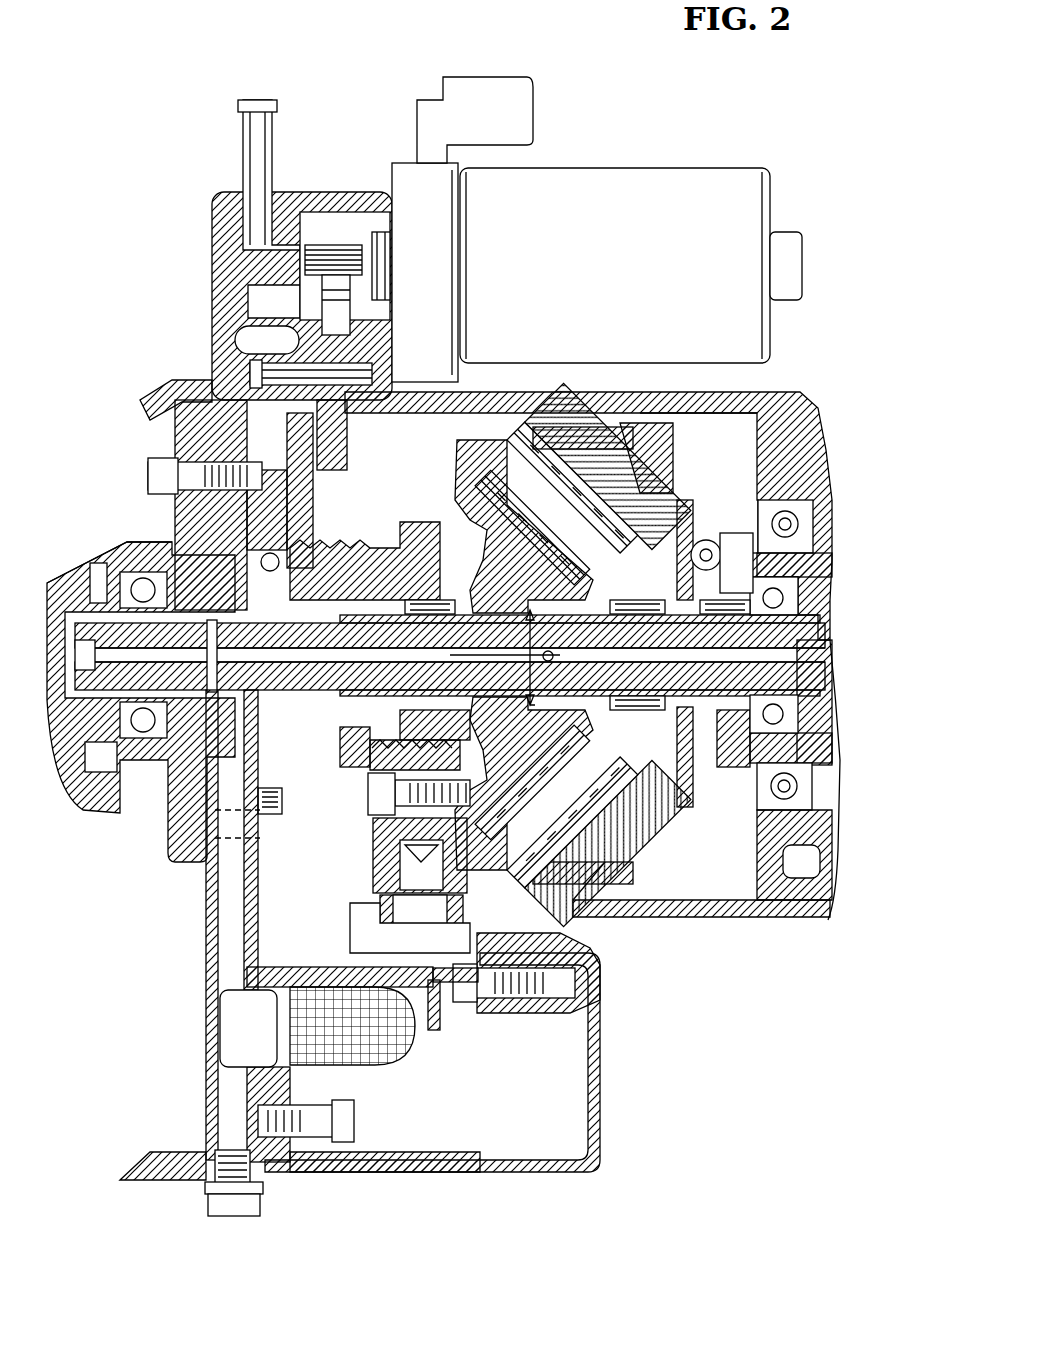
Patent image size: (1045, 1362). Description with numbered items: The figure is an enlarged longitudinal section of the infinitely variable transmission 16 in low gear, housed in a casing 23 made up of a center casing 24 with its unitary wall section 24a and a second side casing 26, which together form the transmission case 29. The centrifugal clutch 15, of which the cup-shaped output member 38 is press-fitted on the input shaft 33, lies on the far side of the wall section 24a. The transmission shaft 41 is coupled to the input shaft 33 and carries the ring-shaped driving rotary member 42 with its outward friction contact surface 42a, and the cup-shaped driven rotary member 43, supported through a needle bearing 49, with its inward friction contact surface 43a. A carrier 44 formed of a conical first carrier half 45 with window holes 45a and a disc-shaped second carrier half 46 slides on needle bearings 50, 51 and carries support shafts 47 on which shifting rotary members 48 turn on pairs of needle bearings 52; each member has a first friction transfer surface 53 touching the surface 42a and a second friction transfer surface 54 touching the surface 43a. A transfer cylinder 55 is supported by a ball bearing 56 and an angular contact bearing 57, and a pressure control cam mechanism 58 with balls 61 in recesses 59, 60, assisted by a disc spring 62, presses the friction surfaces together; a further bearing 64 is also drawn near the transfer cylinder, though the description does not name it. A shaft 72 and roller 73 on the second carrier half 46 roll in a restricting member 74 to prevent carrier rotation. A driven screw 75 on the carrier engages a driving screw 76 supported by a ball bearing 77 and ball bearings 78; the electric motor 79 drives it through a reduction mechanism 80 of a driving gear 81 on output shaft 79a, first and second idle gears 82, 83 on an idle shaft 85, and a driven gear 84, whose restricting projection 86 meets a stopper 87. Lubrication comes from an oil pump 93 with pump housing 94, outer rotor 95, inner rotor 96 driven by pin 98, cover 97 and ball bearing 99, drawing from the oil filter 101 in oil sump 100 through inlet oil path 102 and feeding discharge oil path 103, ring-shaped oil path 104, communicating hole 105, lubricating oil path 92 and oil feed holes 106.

The centrifugal clutch 15 is at (113, 815).
The infinitely variable transmission 16 is at (705, 418).
The casing 23 is at (606, 1095).
The center casing 24 is at (168, 1160).
The wall section 24a is at (205, 1008).
The second side casing 26 is at (688, 920).
The transmission case 29 is at (742, 446).
The input shaft 33 is at (80, 590).
The output member 38 is at (112, 815).
The transmission shaft 41 is at (390, 795).
The driving rotary member 42 is at (495, 730).
The friction contact surface 42a is at (448, 470).
The driven rotary member 43 is at (625, 440).
The friction contact surface 43a is at (600, 880).
The carrier 44 is at (586, 282).
The first carrier half 45 is at (530, 430).
The window holes 45a is at (550, 1000).
The second carrier half 46 is at (470, 430).
The support shafts 47 is at (565, 440).
The shifting rotary members 48 is at (645, 425).
The needle bearing 49 is at (715, 805).
The needle bearing 50 is at (635, 682).
The needle bearing 51 is at (410, 680).
The needle bearings 52 is at (445, 475).
The first friction transfer surface 53 is at (455, 530).
The second friction transfer surface 54 is at (570, 418).
The transfer cylinder 55 is at (818, 520).
The ball bearing 56 is at (806, 465).
The angular contact bearing 57 is at (820, 680).
The pressure control cam mechanism 58 is at (775, 400).
The recesses 59 is at (692, 556).
The recesses 60 is at (812, 565).
The balls 61 is at (710, 525).
The disc spring 62 is at (798, 820).
The bearing 64 is at (830, 722).
The shaft 72 is at (455, 990).
The roller 73 is at (352, 920).
The restricting member 74 is at (362, 892).
The driven screw 75 is at (360, 578).
The driving screw 76 is at (340, 562).
The ball bearing 77 is at (252, 539).
The ball bearings 78 is at (355, 680).
The electric motor 79 is at (660, 258).
The output shaft 79a is at (300, 270).
The reduction mechanism 80 is at (283, 447).
The driving gear 81 is at (328, 250).
The first idle gear 82 is at (355, 298).
The second idle gear 83 is at (298, 325).
The driven gear 84 is at (295, 870).
The idle shaft 85 is at (368, 378).
The restricting projection 86 is at (190, 462).
The stopper 87 is at (284, 800).
The lubricating oil path 92 is at (820, 660).
The oil pump 93 is at (150, 545).
The pump housing 94 is at (228, 872).
The outer rotor 95 is at (225, 605).
The inner rotor 96 is at (190, 795).
The cover 97 is at (168, 840).
The pin 98 is at (225, 660).
The ball bearing 99 is at (110, 748).
The oil sump 100 is at (580, 1090).
The oil filter 101 is at (380, 1065).
The inlet oil path 102 is at (248, 920).
The discharge oil path 103 is at (345, 612).
The ring-shaped oil path 104 is at (270, 778).
The communicating hole 105 is at (306, 632).
The oil feed holes 106 is at (545, 640).